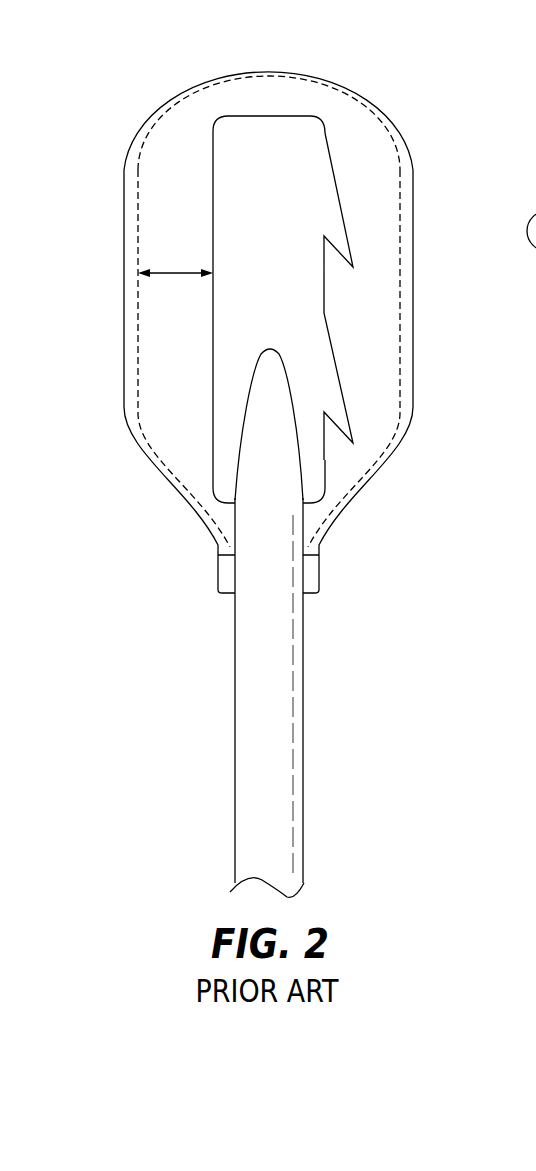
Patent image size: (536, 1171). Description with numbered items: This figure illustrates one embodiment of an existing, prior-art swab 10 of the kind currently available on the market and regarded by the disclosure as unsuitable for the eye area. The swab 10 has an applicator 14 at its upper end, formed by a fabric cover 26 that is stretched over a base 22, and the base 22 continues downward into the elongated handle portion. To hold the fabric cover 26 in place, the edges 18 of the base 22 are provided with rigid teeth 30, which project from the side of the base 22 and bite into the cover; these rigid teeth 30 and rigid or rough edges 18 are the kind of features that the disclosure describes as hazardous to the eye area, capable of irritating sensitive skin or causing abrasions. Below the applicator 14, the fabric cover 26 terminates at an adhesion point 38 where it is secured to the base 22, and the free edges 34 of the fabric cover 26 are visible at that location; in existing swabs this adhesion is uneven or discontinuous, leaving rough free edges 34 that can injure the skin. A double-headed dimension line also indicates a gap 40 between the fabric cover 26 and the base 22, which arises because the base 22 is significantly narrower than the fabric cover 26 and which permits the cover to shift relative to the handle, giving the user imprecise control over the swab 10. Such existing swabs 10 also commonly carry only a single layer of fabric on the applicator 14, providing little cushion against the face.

The swab 10 is at (106, 71).
The applicator 14 is at (172, 212).
The edges 18 is at (213, 336).
The base 22 is at (278, 753).
The fabric cover 26 is at (224, 58).
The rigid teeth 30 is at (340, 240).
The free edges 34 is at (220, 572).
The adhesion point 38 is at (232, 593).
The gap 40 is at (171, 276).